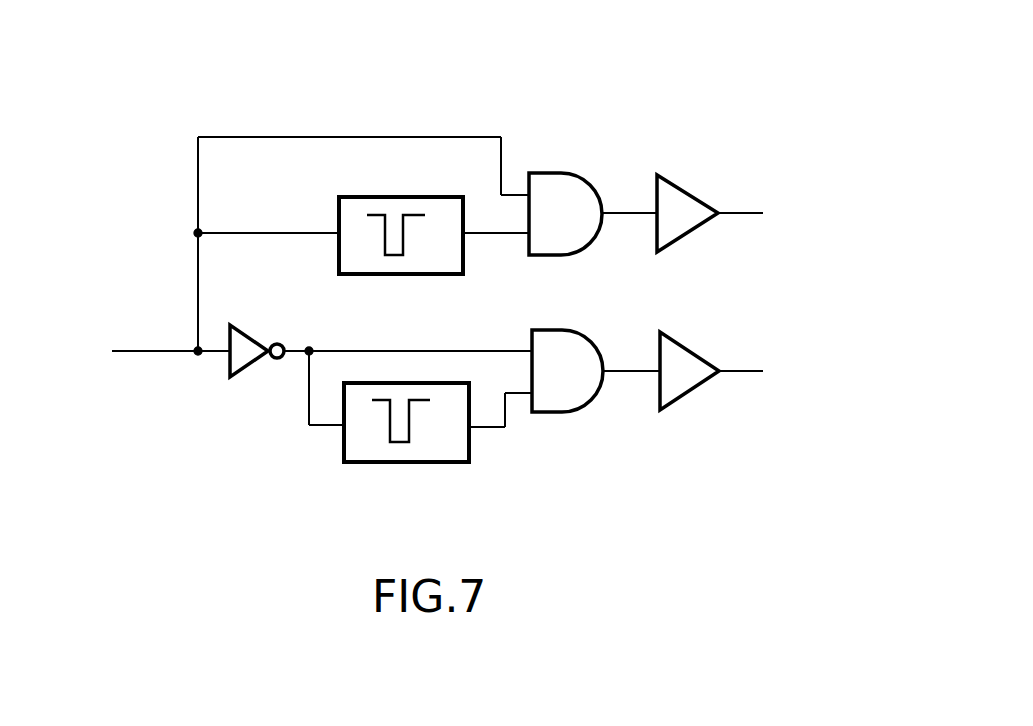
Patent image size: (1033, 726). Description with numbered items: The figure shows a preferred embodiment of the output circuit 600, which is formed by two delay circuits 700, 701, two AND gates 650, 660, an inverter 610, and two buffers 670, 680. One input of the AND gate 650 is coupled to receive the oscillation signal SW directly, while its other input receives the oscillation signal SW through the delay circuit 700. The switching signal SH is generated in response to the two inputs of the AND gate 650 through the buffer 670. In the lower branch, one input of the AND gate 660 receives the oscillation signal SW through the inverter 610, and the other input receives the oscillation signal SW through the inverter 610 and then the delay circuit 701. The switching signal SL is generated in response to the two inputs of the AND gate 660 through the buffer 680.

The output circuit 600 is at (842, 83).
The inverter 610 is at (252, 335).
The AND gate 650 is at (557, 167).
The AND gate 660 is at (572, 340).
The buffer 670 is at (693, 187).
The buffer 680 is at (692, 343).
The delay circuit 700 is at (415, 277).
The delay circuit 701 is at (410, 468).